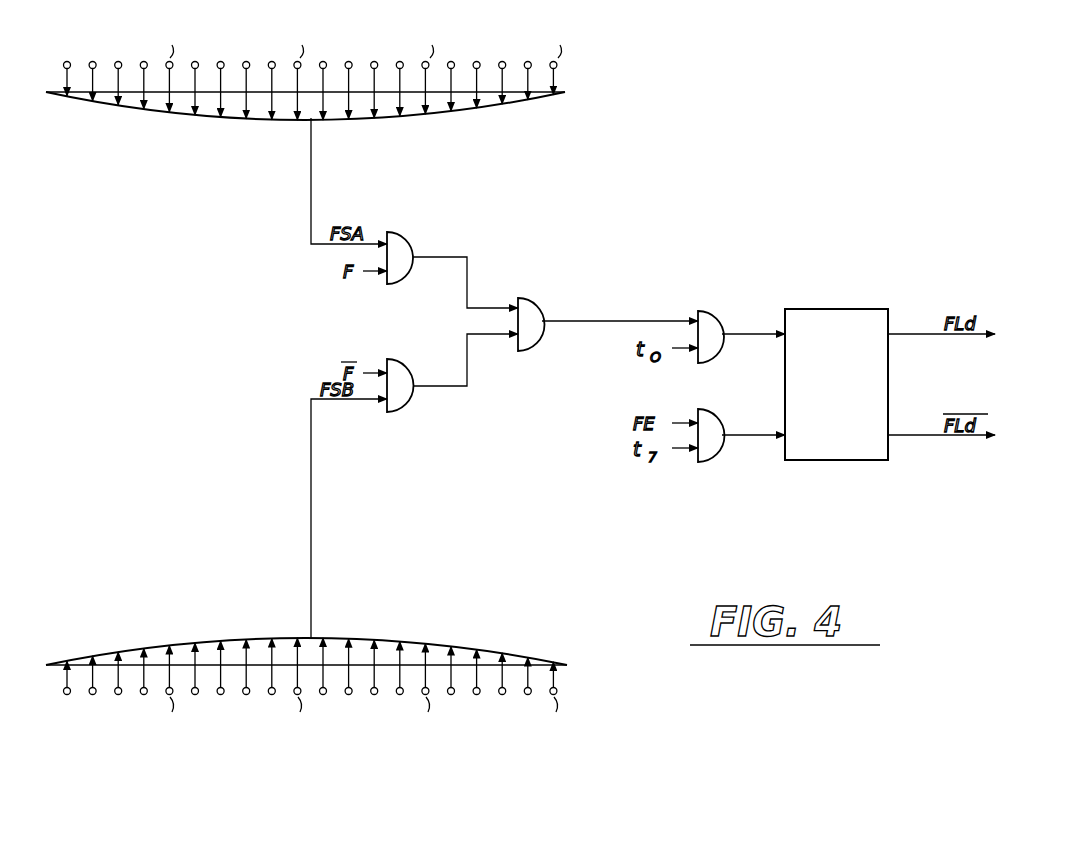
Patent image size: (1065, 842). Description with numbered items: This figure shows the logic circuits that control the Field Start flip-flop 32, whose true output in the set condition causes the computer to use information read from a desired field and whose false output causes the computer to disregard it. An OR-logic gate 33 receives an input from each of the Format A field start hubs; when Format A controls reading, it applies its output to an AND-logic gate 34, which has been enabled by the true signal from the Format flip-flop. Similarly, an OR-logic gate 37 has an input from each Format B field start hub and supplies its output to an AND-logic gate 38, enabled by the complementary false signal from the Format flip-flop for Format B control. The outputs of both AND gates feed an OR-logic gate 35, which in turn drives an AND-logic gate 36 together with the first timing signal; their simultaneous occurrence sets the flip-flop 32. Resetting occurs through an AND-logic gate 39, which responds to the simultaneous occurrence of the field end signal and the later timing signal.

The OR-logic gate 33 is at (406, 112).
The OR-logic gate 37 is at (407, 649).
The AND-logic gate 34 is at (410, 245).
The AND-logic gate 38 is at (404, 400).
The OR-logic gate 35 is at (541, 310).
The AND-logic gate 36 is at (710, 318).
The AND-logic gate 39 is at (712, 425).
The Field Start flip-flop 32 is at (820, 318).